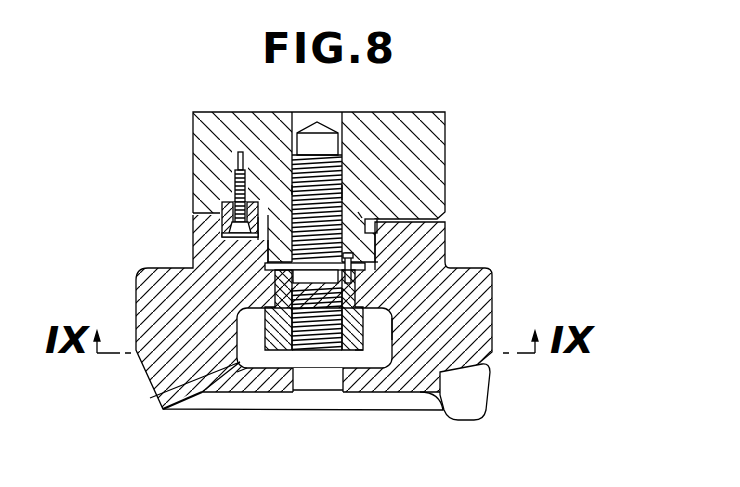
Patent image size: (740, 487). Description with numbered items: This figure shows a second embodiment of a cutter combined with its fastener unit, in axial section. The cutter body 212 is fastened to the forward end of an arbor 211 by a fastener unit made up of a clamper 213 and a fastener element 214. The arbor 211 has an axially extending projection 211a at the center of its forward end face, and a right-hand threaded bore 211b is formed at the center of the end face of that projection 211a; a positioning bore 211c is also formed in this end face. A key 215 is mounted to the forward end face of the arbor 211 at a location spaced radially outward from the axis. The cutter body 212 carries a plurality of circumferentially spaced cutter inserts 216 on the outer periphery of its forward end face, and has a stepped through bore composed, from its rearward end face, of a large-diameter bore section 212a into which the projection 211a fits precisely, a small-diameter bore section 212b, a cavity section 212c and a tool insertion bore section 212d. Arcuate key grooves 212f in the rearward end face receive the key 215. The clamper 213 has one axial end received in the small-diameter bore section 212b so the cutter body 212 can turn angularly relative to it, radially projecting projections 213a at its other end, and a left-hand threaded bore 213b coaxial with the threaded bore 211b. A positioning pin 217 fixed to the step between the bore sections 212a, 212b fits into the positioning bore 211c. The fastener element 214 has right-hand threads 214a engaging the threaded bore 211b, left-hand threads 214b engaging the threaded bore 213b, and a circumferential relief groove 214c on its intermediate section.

The arbor 211 is at (455, 141).
The projection 211a is at (378, 262).
The threaded bore 211b is at (343, 192).
The positioning bore 211c is at (360, 215).
The cutter body 212 is at (488, 266).
The large-diameter bore section 212a is at (283, 262).
The small-diameter bore section 212b is at (392, 320).
The cavity section 212c is at (412, 394).
The tool insertion bore section 212d is at (338, 380).
The key groove 212f is at (230, 242).
The clamper 213 is at (273, 355).
The projection 213a is at (150, 398).
The threaded bore 213b is at (238, 372).
The fastener element 214 is at (447, 134).
The right-hand threads 214a is at (292, 190).
The left-hand threads 214b is at (363, 376).
The circumferential relief groove 214c is at (300, 283).
The key 215 is at (232, 210).
The cutter insert 216 is at (470, 392).
The positioning pin 217 is at (352, 262).